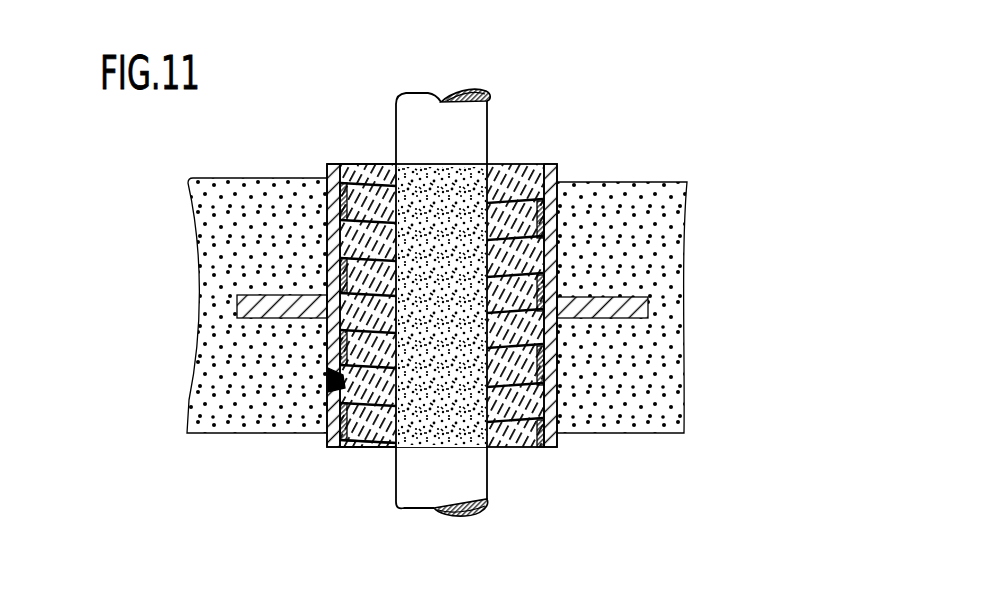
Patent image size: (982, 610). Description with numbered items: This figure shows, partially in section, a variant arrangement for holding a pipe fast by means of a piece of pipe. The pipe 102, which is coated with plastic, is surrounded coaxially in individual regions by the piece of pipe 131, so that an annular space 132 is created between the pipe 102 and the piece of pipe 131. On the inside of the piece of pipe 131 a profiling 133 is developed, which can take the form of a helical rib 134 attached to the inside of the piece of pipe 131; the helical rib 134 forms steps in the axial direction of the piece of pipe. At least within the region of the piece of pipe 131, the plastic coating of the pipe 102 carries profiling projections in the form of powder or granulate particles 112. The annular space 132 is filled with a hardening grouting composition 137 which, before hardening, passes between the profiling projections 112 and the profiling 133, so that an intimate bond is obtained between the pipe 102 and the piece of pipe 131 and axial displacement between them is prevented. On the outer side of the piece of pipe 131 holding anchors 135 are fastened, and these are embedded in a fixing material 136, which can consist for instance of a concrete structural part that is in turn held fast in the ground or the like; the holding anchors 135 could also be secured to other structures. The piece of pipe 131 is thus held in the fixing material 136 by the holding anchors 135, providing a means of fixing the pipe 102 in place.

The pipe 102 is at (473, 148).
The powder or granulate particles 112 is at (497, 432).
The piece of pipe 131 is at (553, 180).
The annular space 132 is at (345, 155).
The profiling 133 is at (333, 380).
The helical rib 134 is at (365, 435).
The holding anchors 135 is at (257, 320).
The fixing material 136 is at (208, 285).
The hardening grouting composition 137 is at (378, 165).